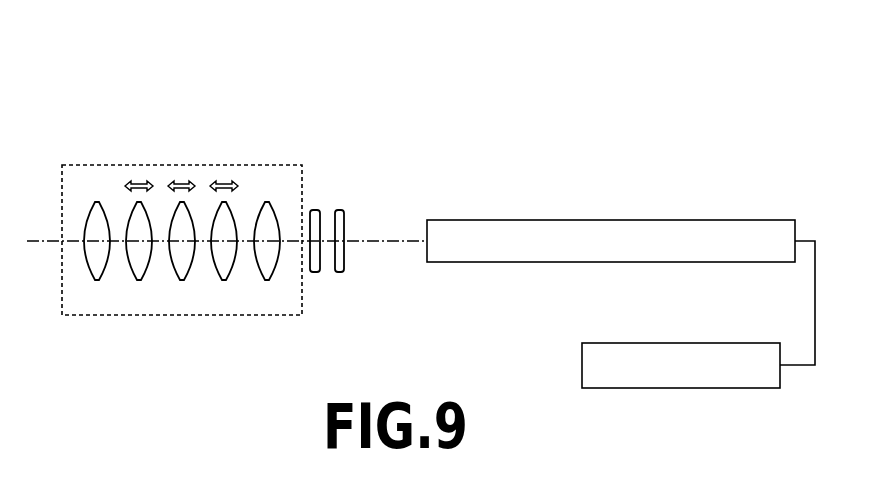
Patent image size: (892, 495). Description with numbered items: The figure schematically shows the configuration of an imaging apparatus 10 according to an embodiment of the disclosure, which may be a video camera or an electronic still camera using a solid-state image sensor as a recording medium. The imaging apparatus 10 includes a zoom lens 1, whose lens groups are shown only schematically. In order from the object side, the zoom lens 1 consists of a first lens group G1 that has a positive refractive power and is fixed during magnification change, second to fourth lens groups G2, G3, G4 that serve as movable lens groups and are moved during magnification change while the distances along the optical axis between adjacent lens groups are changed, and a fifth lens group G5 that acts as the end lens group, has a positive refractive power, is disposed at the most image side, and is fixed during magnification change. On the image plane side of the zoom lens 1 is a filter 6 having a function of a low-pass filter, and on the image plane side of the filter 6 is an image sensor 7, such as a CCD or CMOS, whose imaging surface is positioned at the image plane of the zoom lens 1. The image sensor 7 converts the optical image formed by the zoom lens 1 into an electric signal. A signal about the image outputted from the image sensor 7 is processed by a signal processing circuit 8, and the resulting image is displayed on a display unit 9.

The imaging apparatus 10 is at (278, 57).
The zoom lens 1 is at (214, 165).
The first lens group G1 is at (98, 281).
The second lens group G2 is at (138, 281).
The third lens group G3 is at (178, 281).
The fourth lens group G4 is at (223, 281).
The fifth lens group G5 is at (268, 281).
The filter 6 is at (315, 210).
The image sensor 7 is at (340, 210).
The signal processing circuit 8 is at (745, 220).
The display unit 9 is at (742, 343).